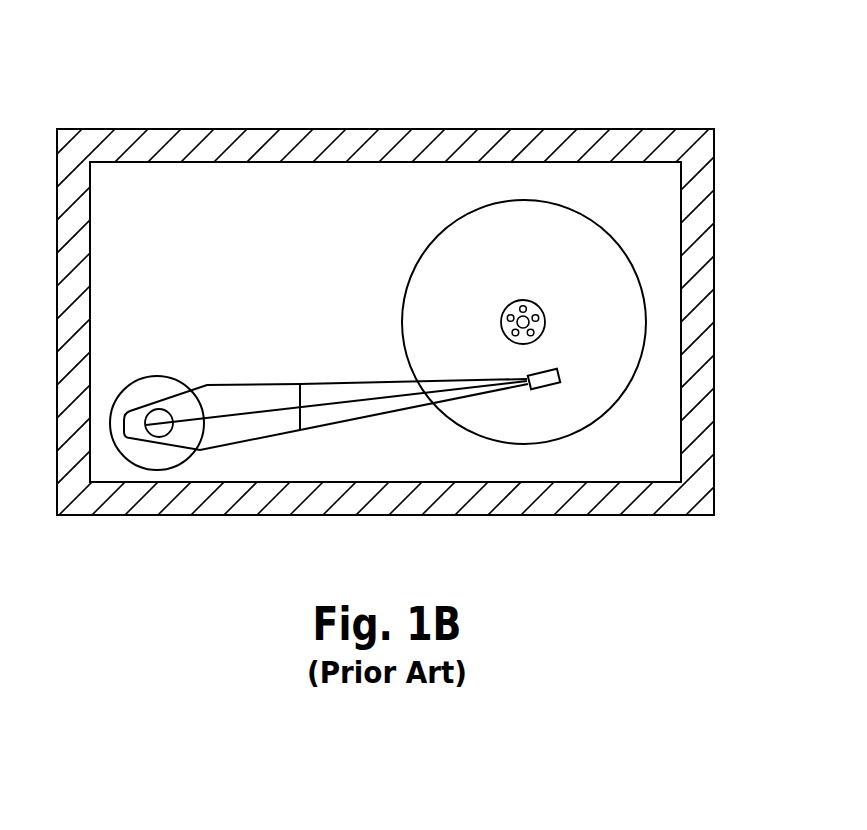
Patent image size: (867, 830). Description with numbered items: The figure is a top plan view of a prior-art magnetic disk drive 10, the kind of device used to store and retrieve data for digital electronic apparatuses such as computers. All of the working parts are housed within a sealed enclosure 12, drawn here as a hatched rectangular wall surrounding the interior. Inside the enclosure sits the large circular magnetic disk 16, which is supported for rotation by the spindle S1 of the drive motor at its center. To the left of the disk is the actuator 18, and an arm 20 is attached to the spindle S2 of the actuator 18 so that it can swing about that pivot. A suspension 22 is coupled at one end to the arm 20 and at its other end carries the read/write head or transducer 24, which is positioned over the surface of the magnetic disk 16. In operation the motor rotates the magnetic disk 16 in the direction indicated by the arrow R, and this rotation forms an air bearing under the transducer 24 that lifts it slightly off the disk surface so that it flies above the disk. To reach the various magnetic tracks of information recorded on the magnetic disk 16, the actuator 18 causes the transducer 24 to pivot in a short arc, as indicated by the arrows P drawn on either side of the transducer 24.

The magnetic disk drive 10 is at (665, 72).
The sealed enclosure 12 is at (400, 507).
The magnetic disk 16 is at (507, 277).
The actuator 18 is at (152, 382).
The arm 20 is at (223, 392).
The suspension 22 is at (360, 408).
The read/write head or transducer 24 is at (554, 371).
The spindle of motor S1 is at (531, 302).
The spindle of actuator S2 is at (160, 432).
The arrow indicating disk rotation R is at (647, 268).
The arrows indicating transducer pivot P is at (538, 370).